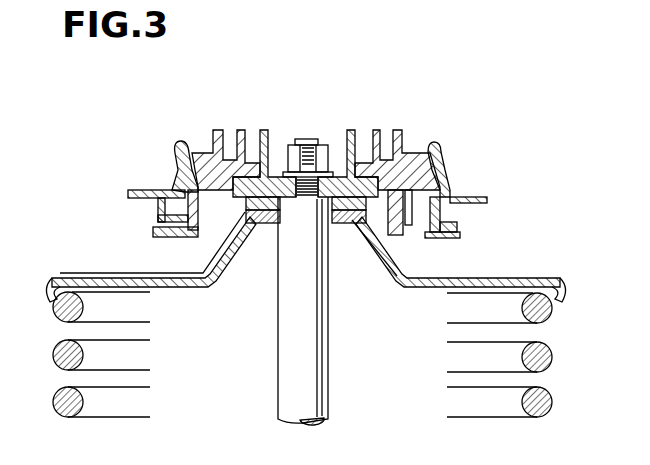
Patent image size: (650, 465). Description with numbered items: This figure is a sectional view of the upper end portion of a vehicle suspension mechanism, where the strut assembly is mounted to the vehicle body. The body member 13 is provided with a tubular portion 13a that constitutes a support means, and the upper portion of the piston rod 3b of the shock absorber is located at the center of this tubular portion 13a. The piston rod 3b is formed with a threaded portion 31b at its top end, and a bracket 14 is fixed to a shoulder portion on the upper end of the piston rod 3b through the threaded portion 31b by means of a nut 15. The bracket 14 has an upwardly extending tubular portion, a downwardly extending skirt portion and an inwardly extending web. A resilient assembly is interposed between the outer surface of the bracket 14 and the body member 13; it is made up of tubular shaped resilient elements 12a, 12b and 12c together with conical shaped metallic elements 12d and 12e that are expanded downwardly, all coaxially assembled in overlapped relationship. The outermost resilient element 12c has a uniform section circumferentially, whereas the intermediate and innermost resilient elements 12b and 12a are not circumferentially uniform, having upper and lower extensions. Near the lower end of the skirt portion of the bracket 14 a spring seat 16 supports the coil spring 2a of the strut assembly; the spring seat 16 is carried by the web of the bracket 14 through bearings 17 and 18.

The coil spring 2a is at (548, 355).
The piston rod 3b is at (278, 322).
The resilient element 12a is at (400, 250).
The resilient element 12b is at (425, 238).
The resilient element 12c is at (452, 187).
The metallic element 12d is at (243, 130).
The metallic element 12e is at (180, 238).
The body member 13 is at (136, 184).
The tubular portion 13a is at (186, 139).
The bracket 14 is at (275, 160).
The nut 15 is at (305, 139).
The spring seat 16 is at (200, 283).
The bearing 17 is at (237, 221).
The bearing 18 is at (263, 230).
The threaded portion 31b is at (329, 160).